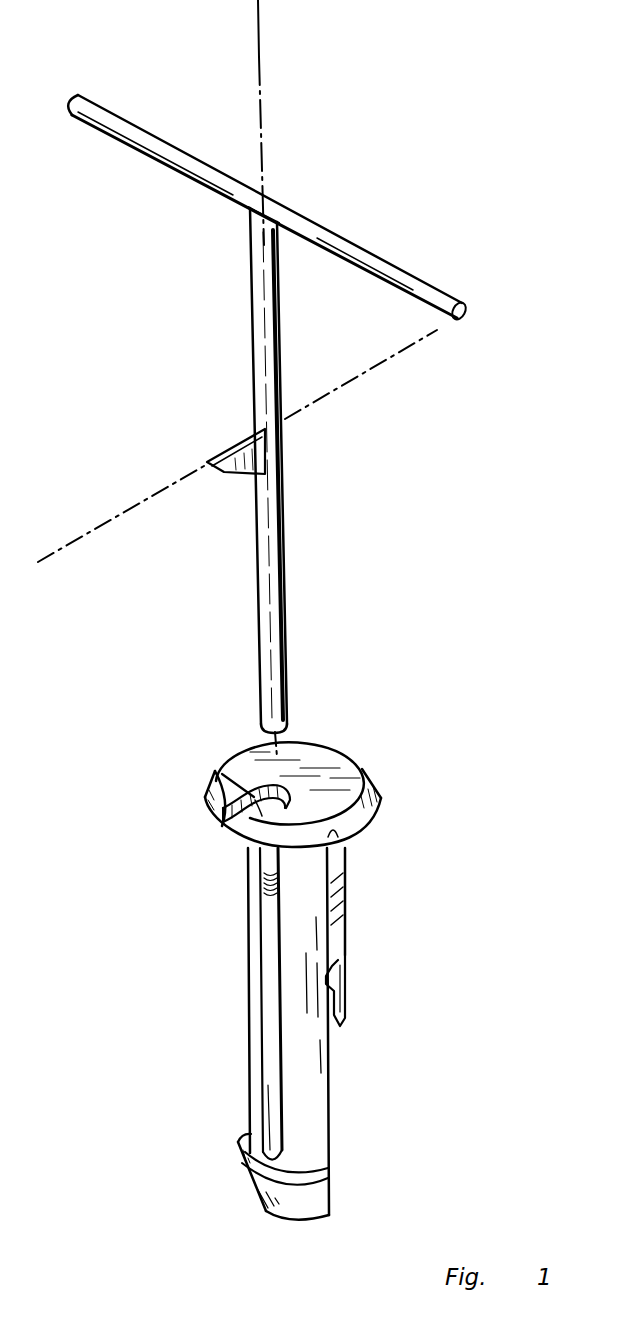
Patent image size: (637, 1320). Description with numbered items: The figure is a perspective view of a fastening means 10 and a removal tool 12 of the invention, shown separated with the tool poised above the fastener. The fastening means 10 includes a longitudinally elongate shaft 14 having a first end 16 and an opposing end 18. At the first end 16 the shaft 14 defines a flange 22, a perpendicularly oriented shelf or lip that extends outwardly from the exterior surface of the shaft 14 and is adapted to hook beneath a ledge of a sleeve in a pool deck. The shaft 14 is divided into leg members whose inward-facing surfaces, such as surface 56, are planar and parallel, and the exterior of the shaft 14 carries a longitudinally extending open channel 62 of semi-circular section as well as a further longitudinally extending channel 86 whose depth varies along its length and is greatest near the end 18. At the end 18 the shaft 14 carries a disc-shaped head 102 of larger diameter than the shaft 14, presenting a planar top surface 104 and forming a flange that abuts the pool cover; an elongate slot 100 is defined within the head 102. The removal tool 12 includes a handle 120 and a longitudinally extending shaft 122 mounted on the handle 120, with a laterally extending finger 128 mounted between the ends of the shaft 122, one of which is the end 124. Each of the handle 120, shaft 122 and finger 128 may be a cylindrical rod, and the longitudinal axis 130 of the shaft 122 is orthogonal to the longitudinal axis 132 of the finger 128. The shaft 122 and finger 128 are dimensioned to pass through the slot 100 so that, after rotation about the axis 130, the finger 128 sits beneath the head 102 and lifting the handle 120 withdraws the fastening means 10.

The fastening means 10 is at (348, 917).
The removal tool 12 is at (268, 414).
The shaft 14 is at (307, 1031).
The first end 16 is at (284, 1169).
The opposing end 18 is at (355, 843).
The flange 22 is at (243, 1143).
The interior-facing surface 56 is at (348, 1000).
The open channel 62 is at (335, 870).
The longitudinally-extending channel 86 is at (270, 956).
The elongate slot 100 is at (310, 767).
The head 102 is at (383, 799).
The top surface 104 is at (327, 753).
The handle 120 is at (357, 250).
The shaft 122 is at (280, 362).
The end 124 is at (252, 210).
The finger 128 is at (240, 448).
The longitudinal axis 130 is at (260, 52).
The longitudinal axis 132 is at (72, 543).